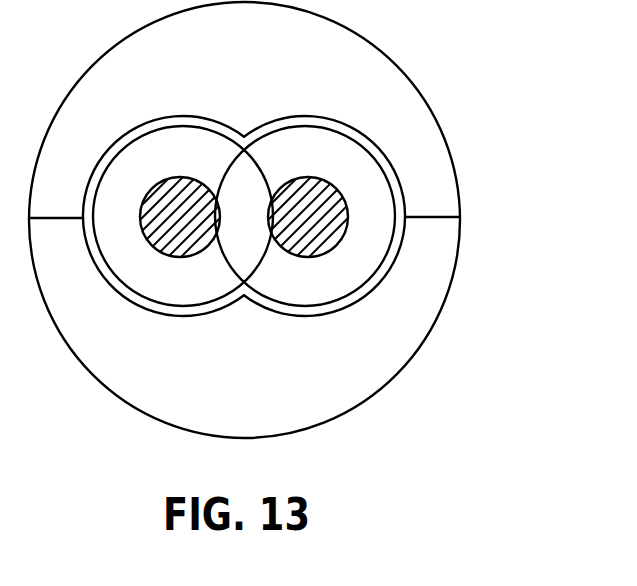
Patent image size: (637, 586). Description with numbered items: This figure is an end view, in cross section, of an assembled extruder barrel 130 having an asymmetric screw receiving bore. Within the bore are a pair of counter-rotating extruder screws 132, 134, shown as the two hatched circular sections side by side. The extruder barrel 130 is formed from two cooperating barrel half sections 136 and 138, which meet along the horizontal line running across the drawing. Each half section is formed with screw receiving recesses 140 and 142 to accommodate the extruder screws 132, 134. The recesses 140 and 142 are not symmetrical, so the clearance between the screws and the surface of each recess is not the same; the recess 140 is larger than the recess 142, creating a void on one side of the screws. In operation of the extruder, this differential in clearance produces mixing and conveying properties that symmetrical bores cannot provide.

The extruder barrel 130 is at (423, 100).
The extruder screw 132 is at (306, 240).
The extruder screw 134 is at (183, 240).
The barrel half section 136 is at (445, 193).
The barrel half section 138 is at (437, 233).
The screw receiving recess 140 is at (307, 116).
The screw receiving recess 142 is at (382, 280).